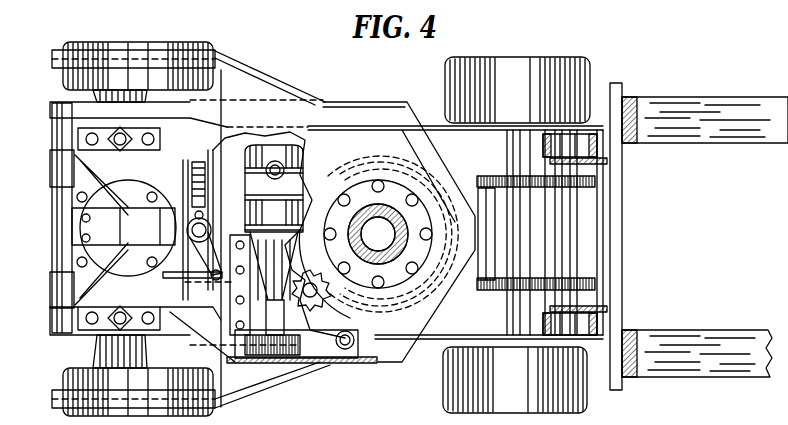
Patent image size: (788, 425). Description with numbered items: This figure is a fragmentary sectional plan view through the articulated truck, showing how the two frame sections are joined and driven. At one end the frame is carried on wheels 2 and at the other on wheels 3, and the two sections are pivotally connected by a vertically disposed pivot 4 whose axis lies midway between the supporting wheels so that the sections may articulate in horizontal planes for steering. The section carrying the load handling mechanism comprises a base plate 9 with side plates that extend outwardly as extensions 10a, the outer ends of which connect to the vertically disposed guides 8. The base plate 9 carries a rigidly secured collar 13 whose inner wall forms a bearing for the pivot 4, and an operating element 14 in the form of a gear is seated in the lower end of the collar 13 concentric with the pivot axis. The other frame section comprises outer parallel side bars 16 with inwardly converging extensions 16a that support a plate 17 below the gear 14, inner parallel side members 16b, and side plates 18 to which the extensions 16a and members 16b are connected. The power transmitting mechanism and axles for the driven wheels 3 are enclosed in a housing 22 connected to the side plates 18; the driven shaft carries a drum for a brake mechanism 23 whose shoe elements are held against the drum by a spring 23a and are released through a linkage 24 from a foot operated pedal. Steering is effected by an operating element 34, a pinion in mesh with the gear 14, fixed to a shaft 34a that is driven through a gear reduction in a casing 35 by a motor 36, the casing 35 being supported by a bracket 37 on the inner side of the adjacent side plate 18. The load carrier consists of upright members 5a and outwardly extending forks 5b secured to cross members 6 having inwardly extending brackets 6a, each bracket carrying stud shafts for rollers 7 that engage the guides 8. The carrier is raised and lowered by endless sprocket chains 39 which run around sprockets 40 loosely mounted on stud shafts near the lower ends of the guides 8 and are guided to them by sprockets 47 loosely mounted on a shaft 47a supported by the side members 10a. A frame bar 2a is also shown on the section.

The wheels 2 is at (525, 62).
The frame bar 2a is at (252, 320).
The wheels 3 is at (186, 47).
The pivot 4 is at (360, 196).
The upright members 5a is at (632, 350).
The forks 5b is at (712, 334).
The cross members 6 is at (617, 252).
The brackets 6a is at (605, 163).
The rollers 7 is at (565, 143).
The guides 8 is at (590, 130).
The base plate 9 is at (448, 325).
The extensions 10a is at (468, 130).
The collar 13 is at (390, 182).
The operating element 14 is at (378, 234).
The side bars 16 is at (127, 58).
The converging extensions 16a is at (290, 90).
The side members 16b is at (165, 133).
The plate 17 is at (244, 84).
The side plates 18 is at (356, 104).
The housing 22 is at (150, 197).
The brake mechanism 23 is at (208, 196).
The spring 23a is at (220, 150).
The linkage 24 is at (164, 278).
The operating element 34 is at (298, 338).
The shaft 34a is at (300, 297).
The casing 35 is at (348, 314).
The motor 36 is at (302, 190).
The bracket 37 is at (358, 358).
The sprocket chains 39 is at (470, 140).
The sprockets 40 is at (595, 186).
The sprockets 47 is at (507, 193).
The shaft 47a is at (510, 253).